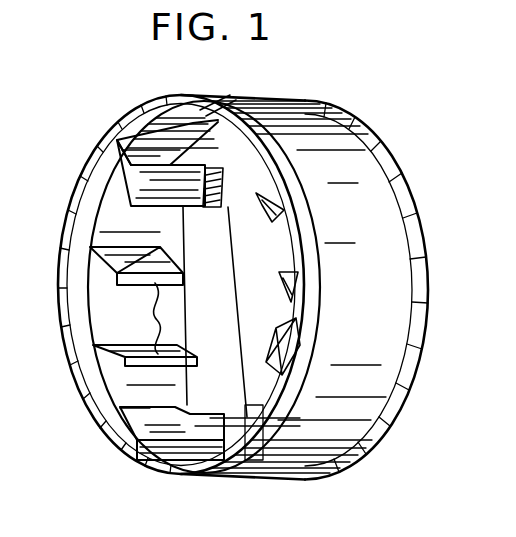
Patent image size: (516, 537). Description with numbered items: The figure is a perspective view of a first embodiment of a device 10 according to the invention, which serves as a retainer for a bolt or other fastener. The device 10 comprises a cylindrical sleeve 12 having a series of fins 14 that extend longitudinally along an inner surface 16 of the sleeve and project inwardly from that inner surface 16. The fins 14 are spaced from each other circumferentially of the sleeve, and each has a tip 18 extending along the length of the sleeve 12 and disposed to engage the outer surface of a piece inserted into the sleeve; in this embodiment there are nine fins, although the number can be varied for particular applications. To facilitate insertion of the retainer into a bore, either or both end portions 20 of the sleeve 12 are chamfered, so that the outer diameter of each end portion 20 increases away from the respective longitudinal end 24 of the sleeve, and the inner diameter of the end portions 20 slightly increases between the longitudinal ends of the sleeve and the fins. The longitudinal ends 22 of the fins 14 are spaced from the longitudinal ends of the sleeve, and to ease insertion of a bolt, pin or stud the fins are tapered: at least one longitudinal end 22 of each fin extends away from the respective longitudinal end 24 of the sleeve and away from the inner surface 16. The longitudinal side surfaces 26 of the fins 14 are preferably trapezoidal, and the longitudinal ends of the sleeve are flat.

The device 10 is at (399, 152).
The cylindrical sleeve 12 is at (367, 258).
The fins 14 is at (237, 148).
The inner surface 16 is at (110, 232).
The tips 18 is at (144, 318).
The end portions 20 is at (73, 307).
The longitudinal ends of the fins 22 is at (110, 355).
The longitudinal end of the sleeve 24 is at (164, 470).
The longitudinal side surfaces 26 is at (118, 148).